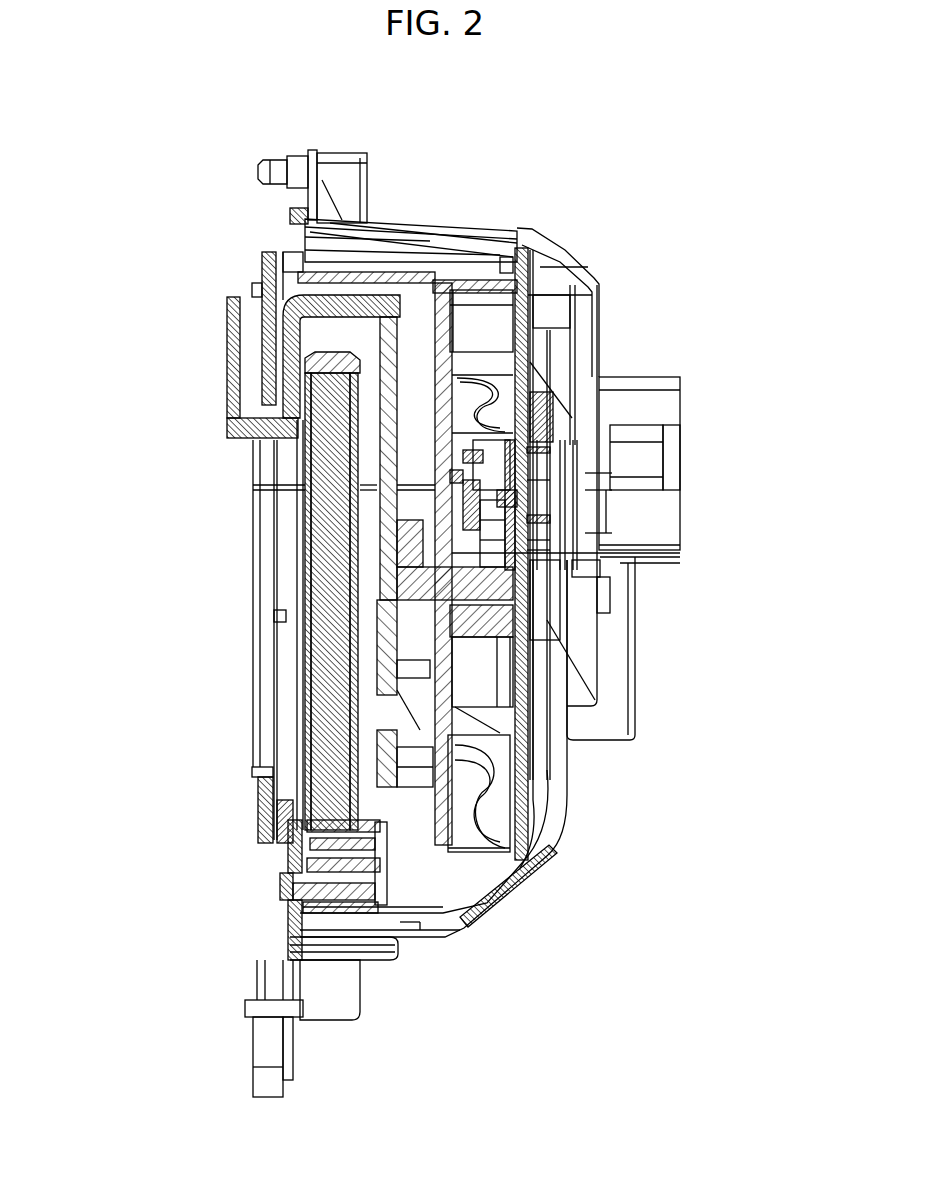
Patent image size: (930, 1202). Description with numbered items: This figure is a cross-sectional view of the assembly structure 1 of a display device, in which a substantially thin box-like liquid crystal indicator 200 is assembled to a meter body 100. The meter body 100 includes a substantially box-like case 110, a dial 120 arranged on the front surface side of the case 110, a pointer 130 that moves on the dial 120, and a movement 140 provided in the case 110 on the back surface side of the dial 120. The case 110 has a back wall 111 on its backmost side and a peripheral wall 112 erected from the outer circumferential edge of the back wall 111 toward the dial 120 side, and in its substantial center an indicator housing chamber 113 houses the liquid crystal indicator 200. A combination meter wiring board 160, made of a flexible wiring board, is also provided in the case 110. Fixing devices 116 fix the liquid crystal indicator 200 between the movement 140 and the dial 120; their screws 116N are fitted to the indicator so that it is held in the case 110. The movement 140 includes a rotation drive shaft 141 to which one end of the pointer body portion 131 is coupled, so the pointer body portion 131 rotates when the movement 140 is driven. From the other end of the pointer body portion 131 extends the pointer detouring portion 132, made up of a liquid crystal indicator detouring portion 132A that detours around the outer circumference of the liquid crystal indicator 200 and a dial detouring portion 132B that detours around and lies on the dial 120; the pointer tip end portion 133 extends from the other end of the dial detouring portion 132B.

The assembly structure 1 is at (155, 212).
The meter body 100 is at (462, 166).
The case 110 is at (577, 244).
The back wall 111 is at (573, 682).
The peripheral wall 112 is at (394, 953).
The indicator housing chamber 113 is at (408, 870).
The fixing device 116 is at (266, 893).
The screw 116N is at (293, 902).
The dial 120 is at (262, 812).
The pointer 130 is at (72, 345).
The pointer body portion 131 is at (378, 538).
The pointer detouring portion 132 is at (135, 452).
The liquid crystal indicator detouring portion 132A is at (308, 453).
The dial detouring portion 132B is at (347, 352).
The pointer tip end portion 133 is at (233, 355).
The movement 140 is at (553, 633).
The rotation drive shaft 141 is at (680, 553).
The combination meter wiring board 160 is at (527, 774).
The liquid crystal indicator 200 is at (335, 668).